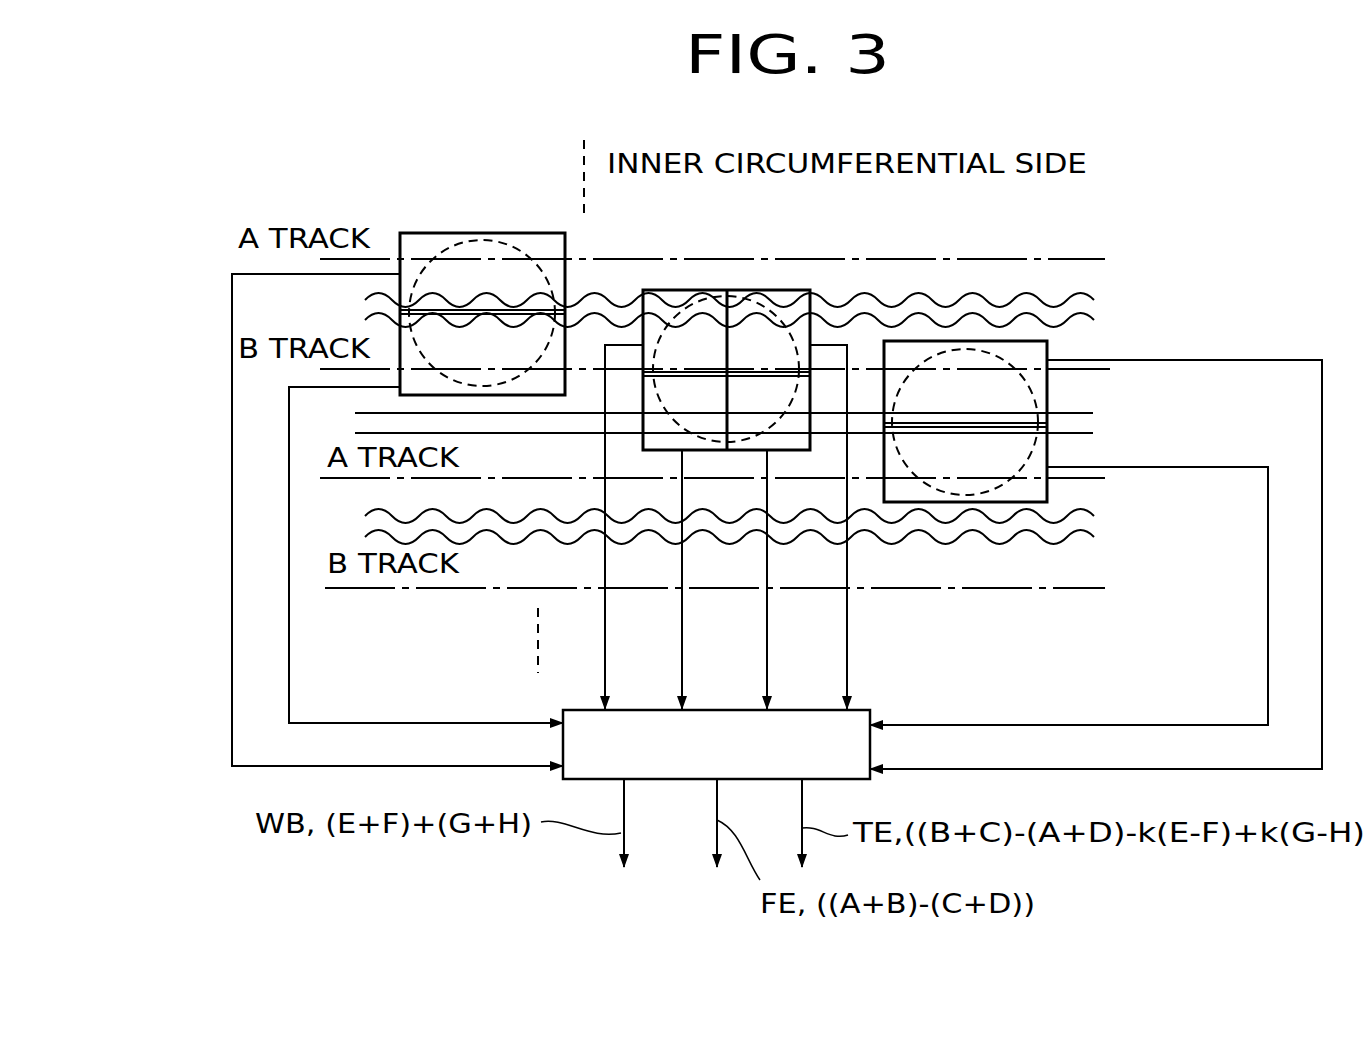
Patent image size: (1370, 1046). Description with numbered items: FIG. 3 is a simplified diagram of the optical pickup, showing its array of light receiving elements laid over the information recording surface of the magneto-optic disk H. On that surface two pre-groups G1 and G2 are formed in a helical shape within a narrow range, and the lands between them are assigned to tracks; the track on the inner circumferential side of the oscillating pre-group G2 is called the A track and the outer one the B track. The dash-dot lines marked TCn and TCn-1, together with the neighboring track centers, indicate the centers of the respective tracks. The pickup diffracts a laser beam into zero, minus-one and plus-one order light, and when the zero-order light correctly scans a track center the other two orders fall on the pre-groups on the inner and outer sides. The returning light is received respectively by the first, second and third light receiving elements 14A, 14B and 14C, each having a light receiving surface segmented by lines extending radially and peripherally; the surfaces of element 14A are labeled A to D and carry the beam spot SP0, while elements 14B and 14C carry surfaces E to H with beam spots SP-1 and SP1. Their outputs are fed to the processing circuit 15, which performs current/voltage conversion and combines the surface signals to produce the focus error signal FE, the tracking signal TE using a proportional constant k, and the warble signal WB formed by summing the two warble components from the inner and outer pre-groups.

The No. 1 light receiving element 14A is at (779, 290).
The No. 2 light receiving element 14B is at (522, 233).
The No. 3 light receiving element 14C is at (998, 341).
The processing circuit 15 is at (866, 712).
The optical disk H is at (1050, 227).
The beam spot SP0 is at (704, 440).
The beam spot SP-1 is at (505, 387).
The beam spot SP1 is at (990, 490).
The pre-group G1 is at (1088, 423).
The pre-group G2 is at (1095, 330).
The track center TCn is at (1100, 479).
The track center TCn-1 is at (1075, 588).